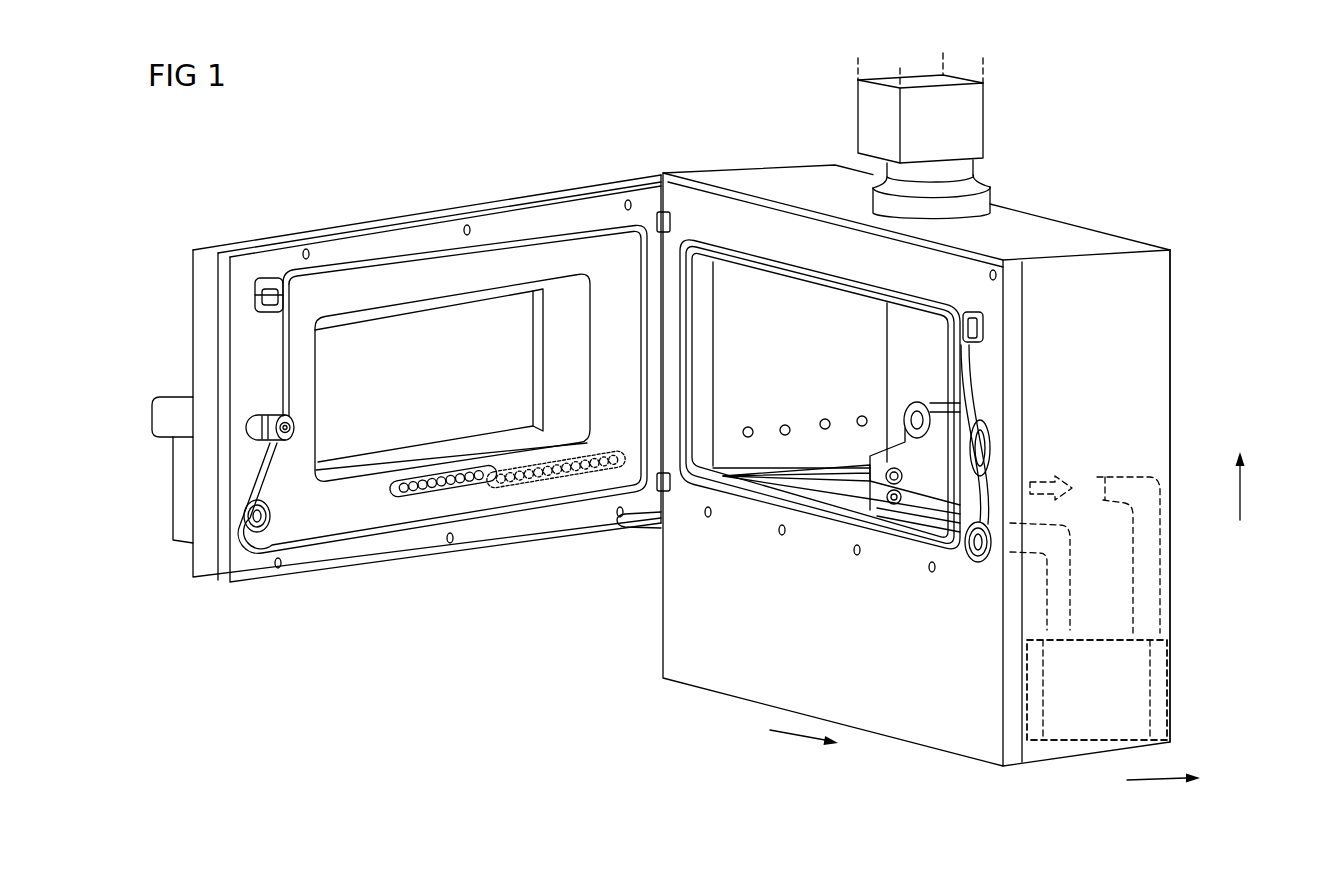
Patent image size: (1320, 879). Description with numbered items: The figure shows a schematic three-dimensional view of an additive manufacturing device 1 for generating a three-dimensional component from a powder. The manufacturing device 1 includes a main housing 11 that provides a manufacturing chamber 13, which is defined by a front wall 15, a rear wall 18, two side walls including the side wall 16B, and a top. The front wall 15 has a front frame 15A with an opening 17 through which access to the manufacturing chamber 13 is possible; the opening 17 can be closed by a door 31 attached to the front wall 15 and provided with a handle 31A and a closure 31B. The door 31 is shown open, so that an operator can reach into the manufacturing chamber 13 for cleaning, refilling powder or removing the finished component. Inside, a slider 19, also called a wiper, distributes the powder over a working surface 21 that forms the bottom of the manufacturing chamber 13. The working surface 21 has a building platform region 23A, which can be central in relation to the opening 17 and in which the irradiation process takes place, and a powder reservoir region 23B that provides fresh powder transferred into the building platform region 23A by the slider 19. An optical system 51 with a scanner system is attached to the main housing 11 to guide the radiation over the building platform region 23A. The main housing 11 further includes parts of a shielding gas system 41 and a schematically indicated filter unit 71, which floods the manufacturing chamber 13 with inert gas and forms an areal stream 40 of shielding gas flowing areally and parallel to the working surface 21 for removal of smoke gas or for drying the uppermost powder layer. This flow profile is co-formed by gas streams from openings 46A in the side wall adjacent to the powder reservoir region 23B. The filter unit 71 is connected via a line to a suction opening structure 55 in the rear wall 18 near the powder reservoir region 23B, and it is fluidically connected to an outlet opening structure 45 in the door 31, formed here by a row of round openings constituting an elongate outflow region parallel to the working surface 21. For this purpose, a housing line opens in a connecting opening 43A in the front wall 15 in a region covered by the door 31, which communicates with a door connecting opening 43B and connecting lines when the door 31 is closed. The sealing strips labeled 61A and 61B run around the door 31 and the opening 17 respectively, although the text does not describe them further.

The additive manufacturing device 1 is at (457, 708).
The main housing 11 is at (1210, 175).
The manufacturing chamber 13 is at (730, 490).
The front wall 15 is at (688, 188).
The front frame 15A is at (793, 222).
The side wall 16B is at (1160, 300).
The opening 17 is at (763, 284).
The rear wall 18 is at (1193, 364).
The slider 19 is at (897, 465).
The working surface 21 is at (741, 438).
The building platform region 23A is at (944, 498).
The powder reservoir region 23B is at (870, 455).
The door 31 is at (352, 208).
The handle 31A is at (180, 395).
The closure 31B is at (278, 418).
The areal stream 40 is at (1058, 478).
The shielding gas system 41 is at (1195, 700).
The connecting opening 43A is at (960, 558).
The connecting opening 43B is at (280, 517).
The outlet opening structure 45 is at (568, 485).
The openings 46A is at (785, 430).
The optical system 51 is at (872, 128).
The suction opening structure 55 is at (1100, 477).
The seal member 61A is at (575, 243).
The seal member 61B is at (828, 540).
The filter unit 71 is at (1170, 670).